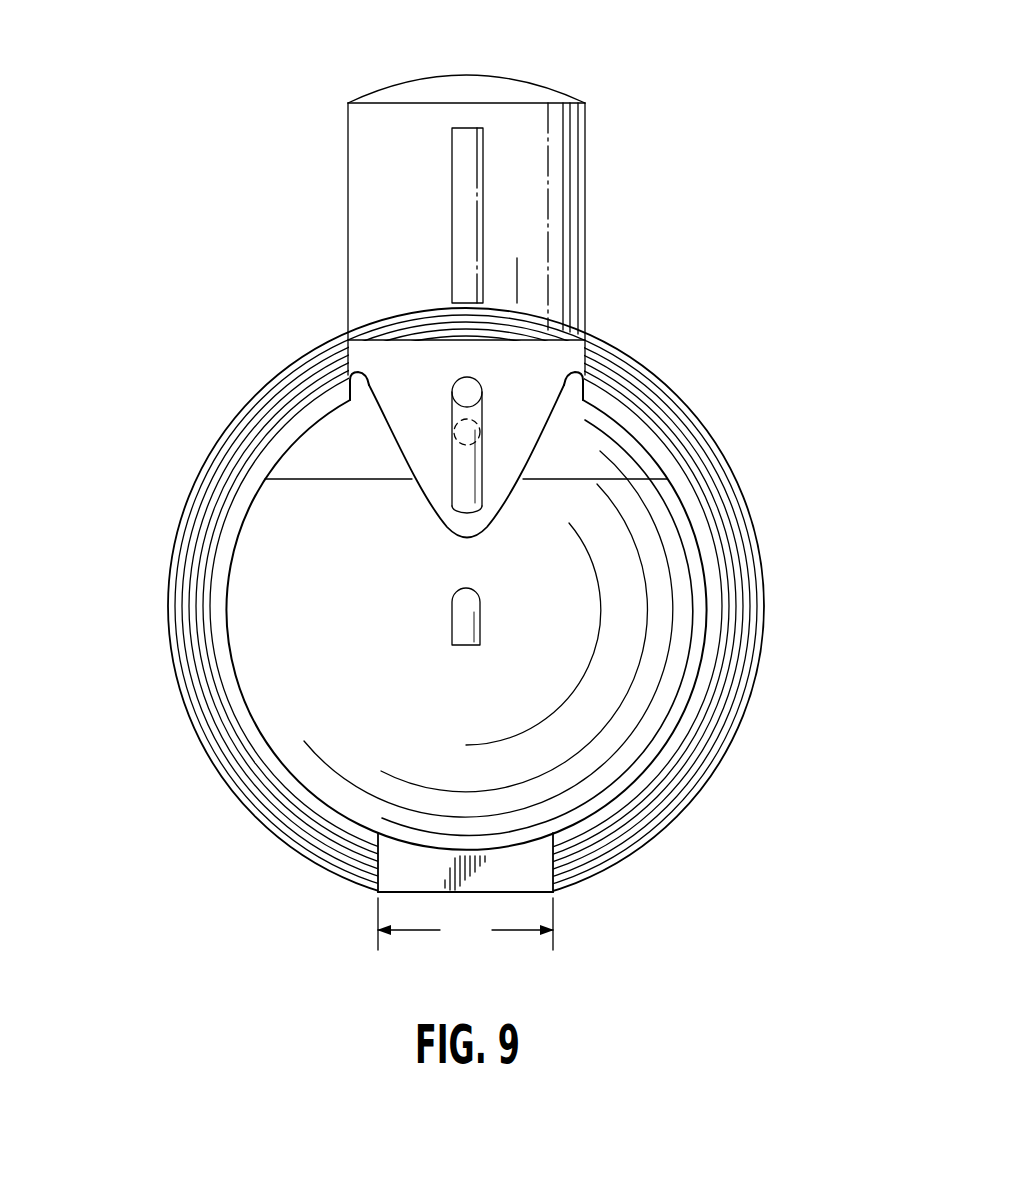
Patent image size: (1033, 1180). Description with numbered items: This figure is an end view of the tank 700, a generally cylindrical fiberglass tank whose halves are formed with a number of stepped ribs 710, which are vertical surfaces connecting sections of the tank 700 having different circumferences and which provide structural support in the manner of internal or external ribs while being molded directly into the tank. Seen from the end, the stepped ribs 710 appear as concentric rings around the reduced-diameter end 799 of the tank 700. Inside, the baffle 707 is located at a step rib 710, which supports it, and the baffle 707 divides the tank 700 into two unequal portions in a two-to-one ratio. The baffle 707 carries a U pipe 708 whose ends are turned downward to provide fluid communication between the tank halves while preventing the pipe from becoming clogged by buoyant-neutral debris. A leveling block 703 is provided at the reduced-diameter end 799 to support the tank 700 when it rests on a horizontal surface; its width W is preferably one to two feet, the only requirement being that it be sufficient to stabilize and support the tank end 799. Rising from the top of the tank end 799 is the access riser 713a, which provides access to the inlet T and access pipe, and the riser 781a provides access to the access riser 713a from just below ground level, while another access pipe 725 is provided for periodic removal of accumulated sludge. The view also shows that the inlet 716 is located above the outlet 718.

The tank 700 is at (694, 95).
The riser 781a is at (587, 248).
The access pipe 725 is at (452, 252).
The stepped ribs 710 is at (643, 847).
The reduced-diameter end 799 is at (243, 562).
The baffle 707 is at (663, 617).
The access riser 713a is at (378, 363).
The inlet 716 is at (482, 392).
The outlet 718 is at (486, 436).
The U pipe 708 is at (450, 624).
The leveling block 703 is at (553, 893).